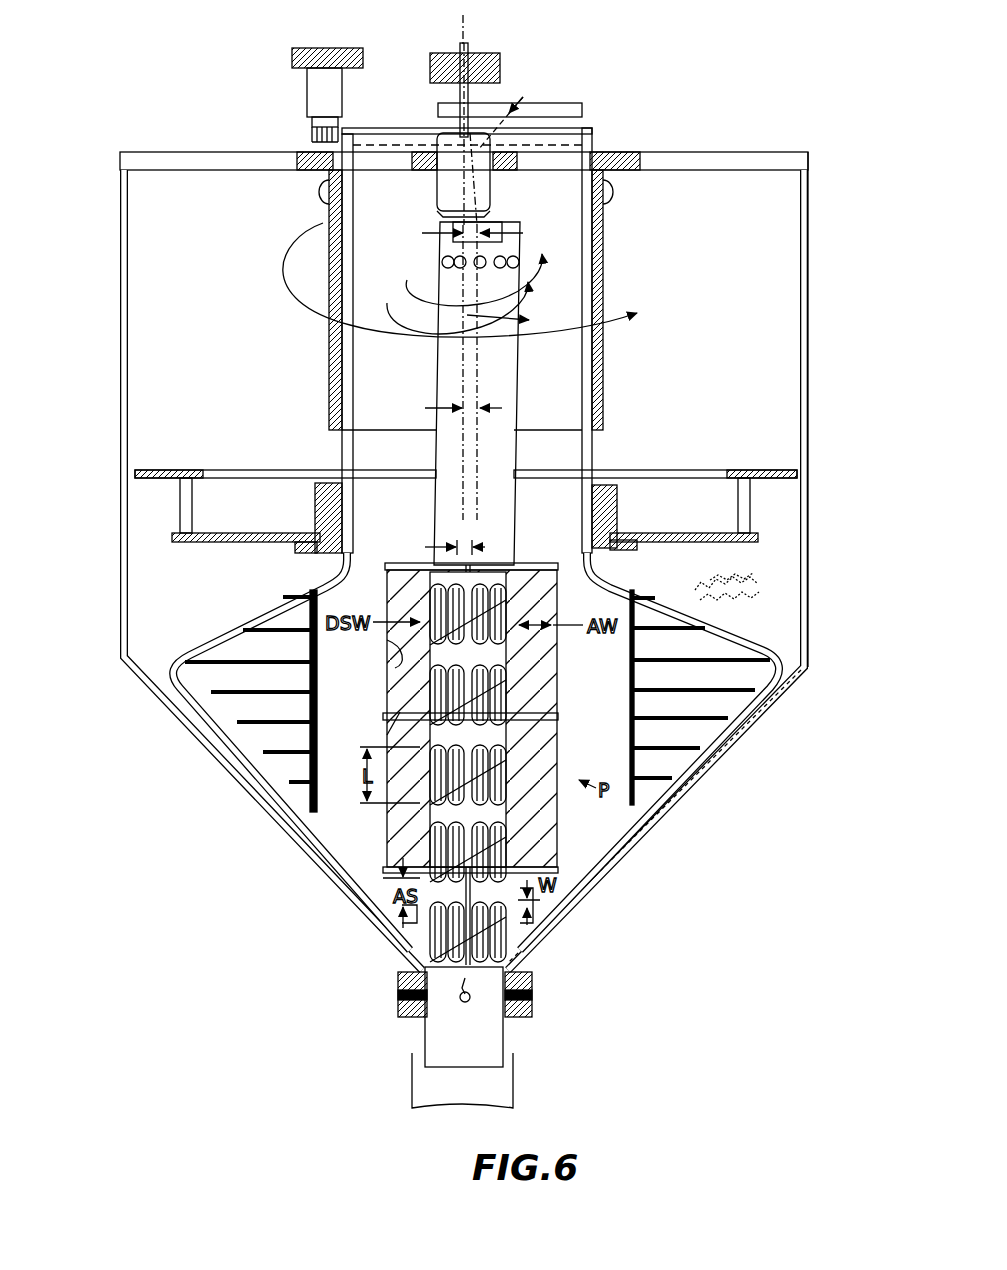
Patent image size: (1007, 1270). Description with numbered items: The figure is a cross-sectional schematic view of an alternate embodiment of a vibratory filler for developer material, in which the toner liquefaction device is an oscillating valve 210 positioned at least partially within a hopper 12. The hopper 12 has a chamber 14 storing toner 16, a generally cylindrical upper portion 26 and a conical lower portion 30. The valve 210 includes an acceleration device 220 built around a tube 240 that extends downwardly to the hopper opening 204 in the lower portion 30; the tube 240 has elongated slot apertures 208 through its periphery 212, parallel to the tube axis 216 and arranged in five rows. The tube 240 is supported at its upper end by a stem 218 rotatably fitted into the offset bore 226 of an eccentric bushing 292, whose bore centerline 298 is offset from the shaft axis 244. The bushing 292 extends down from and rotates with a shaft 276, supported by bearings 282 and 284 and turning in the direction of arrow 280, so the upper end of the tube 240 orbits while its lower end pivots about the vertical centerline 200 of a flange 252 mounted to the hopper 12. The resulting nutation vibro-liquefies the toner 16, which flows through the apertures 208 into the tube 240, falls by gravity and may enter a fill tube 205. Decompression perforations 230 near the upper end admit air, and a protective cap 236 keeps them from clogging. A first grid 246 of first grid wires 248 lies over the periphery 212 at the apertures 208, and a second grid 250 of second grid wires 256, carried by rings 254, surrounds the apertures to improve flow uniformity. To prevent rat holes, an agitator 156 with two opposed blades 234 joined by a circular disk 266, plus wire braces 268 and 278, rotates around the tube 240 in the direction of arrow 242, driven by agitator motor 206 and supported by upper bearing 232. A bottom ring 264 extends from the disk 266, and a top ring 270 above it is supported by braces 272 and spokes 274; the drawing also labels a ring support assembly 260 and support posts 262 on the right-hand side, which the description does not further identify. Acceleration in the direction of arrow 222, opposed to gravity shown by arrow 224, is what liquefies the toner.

The hopper 12 is at (810, 568).
The chamber 14 is at (770, 565).
The toner 16 is at (733, 590).
The upper portion 26 is at (810, 192).
The lower portion 30 is at (697, 783).
The agitator 156 is at (207, 725).
The vertical centerline 200 is at (470, 1000).
The hopper opening 204 is at (532, 965).
The fill tube 205 is at (503, 1085).
The agitator motor 206 is at (300, 55).
The apertures 208 is at (513, 690).
The oscillating valve 210 is at (790, 124).
The periphery 212 is at (515, 450).
The tube axis 216 is at (515, 381).
The stem 218 is at (492, 222).
The acceleration device 220 is at (350, 837).
The arrow 222 is at (867, 218).
The arrow 224 is at (863, 493).
The offset bore 226 is at (487, 200).
The decompression perforations 230 is at (443, 258).
The upper bearing 232 is at (318, 160).
The agitator blade 234 is at (250, 605).
The protective cap 236 is at (328, 345).
The tube 240 is at (523, 540).
The arrow 242 is at (280, 285).
The shaft axis 244 is at (460, 33).
The first grid 246 is at (373, 862).
The first grid wires 248 is at (513, 665).
The second grid 250 is at (553, 780).
The flange 252 is at (532, 1012).
The rings 254 is at (557, 568).
The second grid wires 256 is at (400, 660).
The support assembly 260 is at (743, 455).
The support post 262 is at (767, 470).
The bottom ring 264 is at (178, 542).
The circular disk 266 is at (322, 500).
The wire braces 268 is at (707, 690).
The top ring 270 is at (165, 470).
The braces 272 is at (192, 505).
The spokes 274 is at (700, 470).
The shaft 276 is at (458, 90).
The wire braces 278 is at (318, 641).
The arrow 280 is at (567, 277).
The bearing 282 is at (500, 60).
The bearing 284 is at (517, 168).
The eccentric bushing 292 is at (437, 204).
The centerline 298 is at (514, 114).